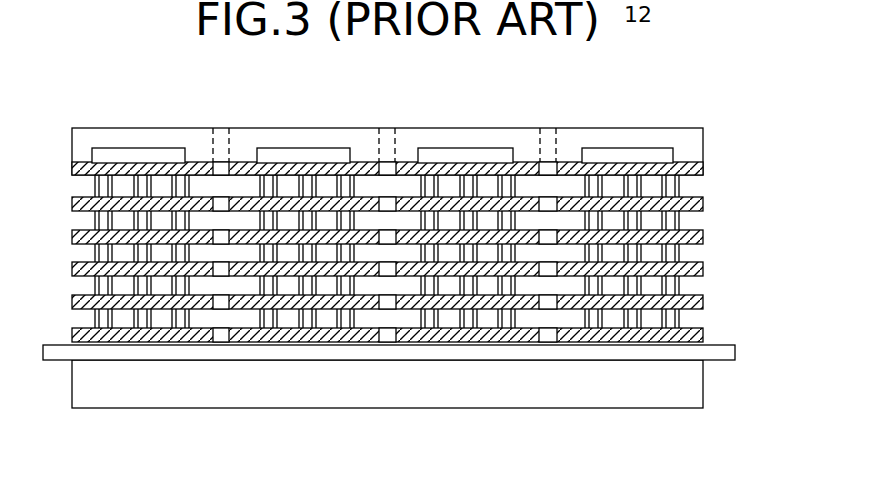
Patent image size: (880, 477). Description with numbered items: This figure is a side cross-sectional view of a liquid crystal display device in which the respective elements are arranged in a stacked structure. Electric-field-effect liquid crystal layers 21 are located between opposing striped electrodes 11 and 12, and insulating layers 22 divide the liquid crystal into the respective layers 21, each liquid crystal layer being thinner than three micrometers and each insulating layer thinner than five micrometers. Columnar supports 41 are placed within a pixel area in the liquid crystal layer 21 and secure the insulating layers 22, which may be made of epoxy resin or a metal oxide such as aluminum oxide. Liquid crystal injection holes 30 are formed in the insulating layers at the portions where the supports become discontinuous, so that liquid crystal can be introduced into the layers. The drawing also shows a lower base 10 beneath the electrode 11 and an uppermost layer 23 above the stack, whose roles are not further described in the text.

The base substrate 10 is at (683, 385).
The striped electrode 11 is at (713, 355).
The striped electrode 12 is at (337, 152).
The liquid crystal layer 21 is at (680, 290).
The insulating layer 22 is at (703, 207).
The top insulating layer 23 is at (697, 150).
The liquid crystal injection hole 30 is at (220, 168).
The columnar support 41 is at (427, 342).